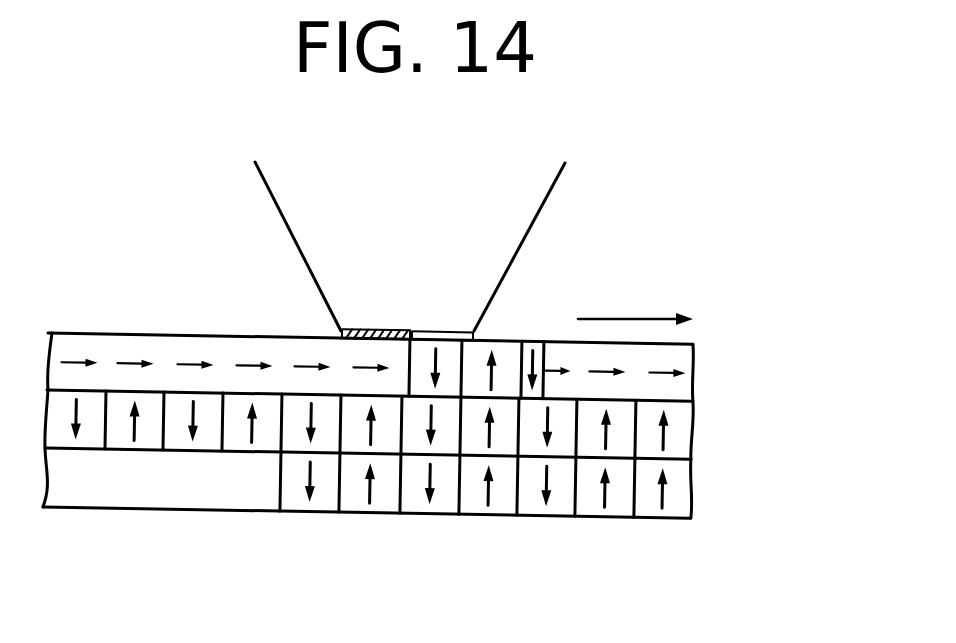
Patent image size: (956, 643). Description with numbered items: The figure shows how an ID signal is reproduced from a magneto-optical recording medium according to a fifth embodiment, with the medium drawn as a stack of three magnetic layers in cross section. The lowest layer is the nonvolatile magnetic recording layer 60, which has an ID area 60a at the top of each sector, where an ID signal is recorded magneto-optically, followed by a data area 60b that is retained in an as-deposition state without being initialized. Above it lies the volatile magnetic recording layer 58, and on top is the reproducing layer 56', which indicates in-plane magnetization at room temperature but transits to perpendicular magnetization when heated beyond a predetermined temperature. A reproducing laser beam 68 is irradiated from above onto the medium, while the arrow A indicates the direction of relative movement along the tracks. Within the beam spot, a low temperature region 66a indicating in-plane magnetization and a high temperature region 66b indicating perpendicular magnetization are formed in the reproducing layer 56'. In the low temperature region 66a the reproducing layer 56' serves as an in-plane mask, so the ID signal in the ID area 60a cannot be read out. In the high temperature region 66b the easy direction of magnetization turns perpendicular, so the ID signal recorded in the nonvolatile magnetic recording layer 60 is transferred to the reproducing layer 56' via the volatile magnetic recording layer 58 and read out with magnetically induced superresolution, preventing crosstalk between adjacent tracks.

The reproducing layer 56' is at (421, 367).
The volatile magnetic recording layer 58 is at (677, 435).
The nonvolatile magnetic recording layer 60 is at (678, 497).
The ID area 60a is at (688, 530).
The data area 60b is at (160, 500).
The low temperature region 66a is at (375, 320).
The high temperature region 66b is at (444, 320).
The reproducing laser beam 68 is at (552, 193).
The direction of relative movement A is at (626, 319).